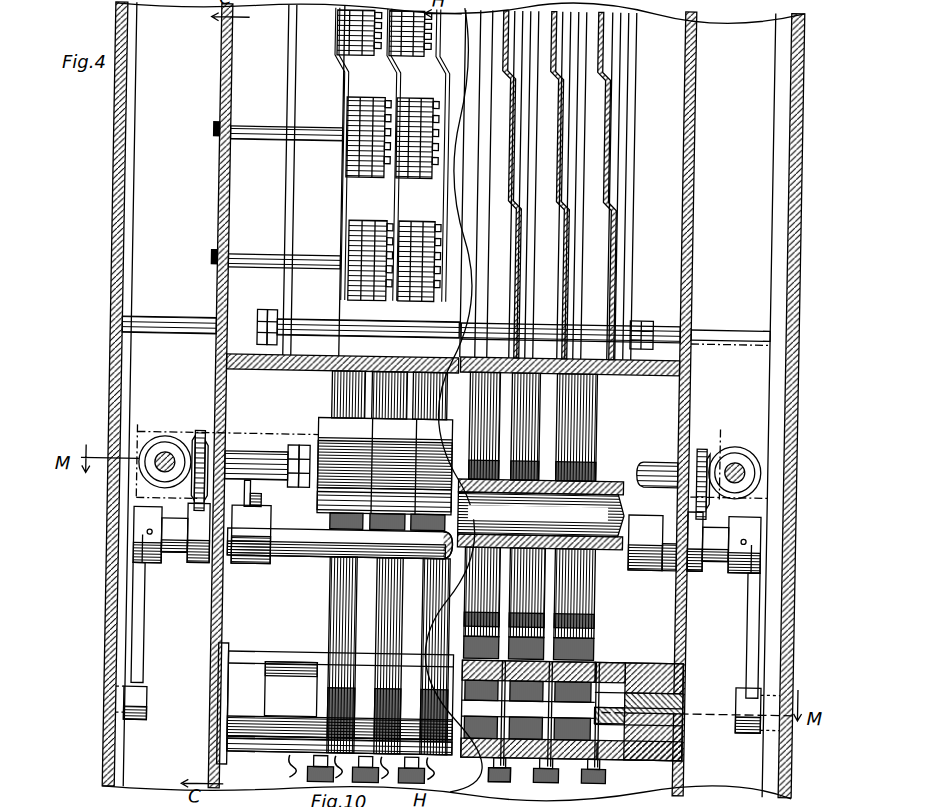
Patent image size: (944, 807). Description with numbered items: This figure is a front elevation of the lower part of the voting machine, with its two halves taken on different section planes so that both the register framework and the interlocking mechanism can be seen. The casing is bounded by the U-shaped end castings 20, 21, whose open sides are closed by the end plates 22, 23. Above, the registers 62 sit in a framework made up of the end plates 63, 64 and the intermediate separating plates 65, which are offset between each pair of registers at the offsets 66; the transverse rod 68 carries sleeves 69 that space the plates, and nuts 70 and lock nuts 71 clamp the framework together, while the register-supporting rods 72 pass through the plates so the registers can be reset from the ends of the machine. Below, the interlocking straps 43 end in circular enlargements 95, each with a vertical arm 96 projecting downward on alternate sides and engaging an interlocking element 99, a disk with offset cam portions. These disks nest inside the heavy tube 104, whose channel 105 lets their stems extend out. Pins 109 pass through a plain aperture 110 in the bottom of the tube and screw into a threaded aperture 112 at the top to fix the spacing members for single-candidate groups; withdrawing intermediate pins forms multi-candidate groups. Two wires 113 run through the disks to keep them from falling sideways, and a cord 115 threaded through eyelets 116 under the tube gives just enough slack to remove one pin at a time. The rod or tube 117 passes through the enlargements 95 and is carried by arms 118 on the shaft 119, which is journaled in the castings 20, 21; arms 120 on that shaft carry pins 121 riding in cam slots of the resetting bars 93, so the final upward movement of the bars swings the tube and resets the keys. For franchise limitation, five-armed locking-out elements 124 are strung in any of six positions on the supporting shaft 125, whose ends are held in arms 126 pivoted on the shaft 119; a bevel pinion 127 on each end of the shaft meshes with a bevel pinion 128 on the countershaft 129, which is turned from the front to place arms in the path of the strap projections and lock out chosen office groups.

The end casting 20 is at (215, 214).
The end casting 21 is at (690, 226).
The end plate 22 is at (109, 240).
The end plate 23 is at (798, 198).
The interlocking strap 43 is at (603, 410).
The register 62 is at (352, 150).
The end plate 63 is at (282, 183).
The end plate 64 is at (630, 180).
The intermediate separating plate 65 is at (346, 244).
The offset 66 is at (392, 203).
The transverse rod 68 is at (200, 322).
The sleeve 69 is at (330, 322).
The nut 70 is at (270, 313).
The lock nut 71 is at (258, 314).
The register-supporting rod 72 is at (265, 258).
The resetting bar 93 is at (130, 242).
The circular enlargement 95 is at (593, 592).
The vertical arm 96 is at (333, 668).
The interlocking element 99 is at (605, 757).
The tube 104 is at (335, 705).
The channel 105 is at (290, 689).
The pin 109 is at (530, 775).
The plain aperture 110 is at (517, 757).
The threaded aperture 112 is at (588, 660).
The wire 113 is at (688, 690).
The cord 115 is at (314, 774).
The eyelet 116 is at (292, 760).
The rod or tube 117 is at (263, 500).
The arm 118 is at (454, 538).
The shaft 119 is at (339, 543).
The arm 120 is at (148, 630).
The pin 121 is at (156, 697).
The locking-out element 124 is at (398, 439).
The supporting shaft 125 is at (296, 455).
The arm 126 is at (198, 508).
The bevel pinion 127 is at (201, 437).
The bevel pinion 128 is at (158, 443).
The countershaft 129 is at (158, 472).